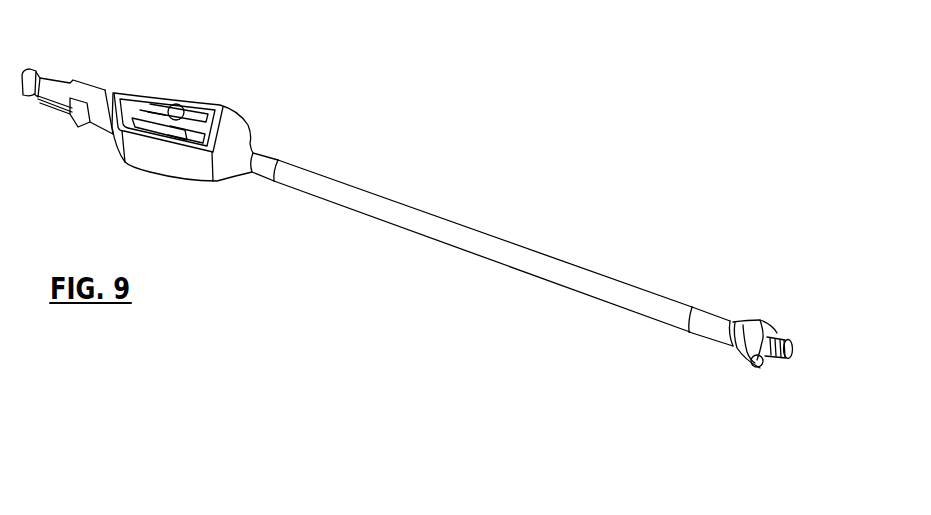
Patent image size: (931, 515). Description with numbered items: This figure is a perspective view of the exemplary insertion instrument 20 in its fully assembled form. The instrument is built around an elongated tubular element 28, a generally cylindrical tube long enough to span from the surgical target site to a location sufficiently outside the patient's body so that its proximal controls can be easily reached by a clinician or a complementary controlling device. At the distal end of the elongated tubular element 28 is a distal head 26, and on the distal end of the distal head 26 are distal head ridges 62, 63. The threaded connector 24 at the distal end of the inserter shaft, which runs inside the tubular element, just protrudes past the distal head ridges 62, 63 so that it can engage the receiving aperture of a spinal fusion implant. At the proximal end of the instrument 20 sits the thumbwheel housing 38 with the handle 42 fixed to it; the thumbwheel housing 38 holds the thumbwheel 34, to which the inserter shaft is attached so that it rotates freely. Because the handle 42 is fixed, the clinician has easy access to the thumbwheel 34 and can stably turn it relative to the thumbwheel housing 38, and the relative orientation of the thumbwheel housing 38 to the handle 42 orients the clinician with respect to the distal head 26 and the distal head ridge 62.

The insertion instrument 20 is at (340, 242).
The handle 42 is at (60, 85).
The thumbwheel housing 38 is at (224, 130).
The thumbwheel 34 is at (177, 110).
The elongated tubular element 28 is at (433, 217).
The distal head 26 is at (753, 322).
The distal head ridge 62 is at (752, 363).
The threaded connector 24 is at (790, 363).
The distal head ridge 63 is at (781, 338).